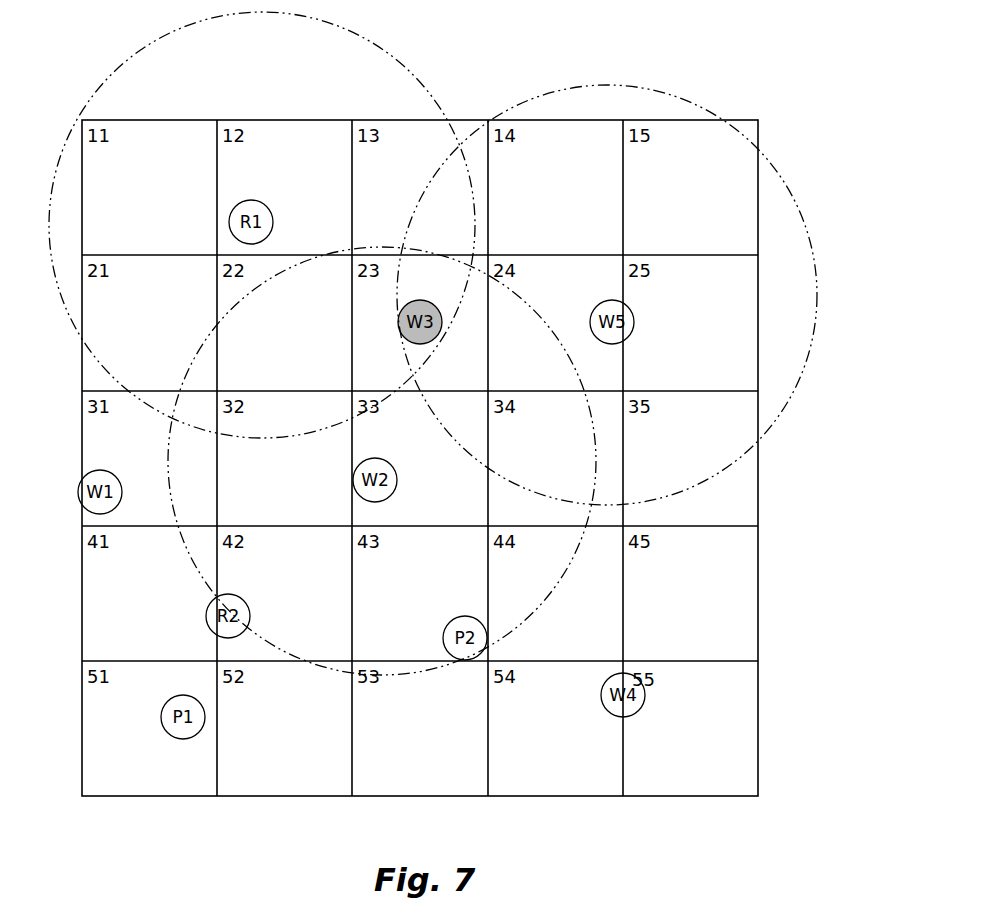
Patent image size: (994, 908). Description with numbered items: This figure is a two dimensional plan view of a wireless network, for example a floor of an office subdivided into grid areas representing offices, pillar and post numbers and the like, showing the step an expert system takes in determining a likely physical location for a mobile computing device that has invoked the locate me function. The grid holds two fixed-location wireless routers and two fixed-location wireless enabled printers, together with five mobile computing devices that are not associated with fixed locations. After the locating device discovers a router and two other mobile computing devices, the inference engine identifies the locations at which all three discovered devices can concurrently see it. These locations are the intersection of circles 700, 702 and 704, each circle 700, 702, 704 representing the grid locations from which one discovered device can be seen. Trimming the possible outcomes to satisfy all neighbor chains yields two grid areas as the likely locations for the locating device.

The circle 700 is at (395, 53).
The circle 702 is at (580, 87).
The circle 704 is at (407, 676).